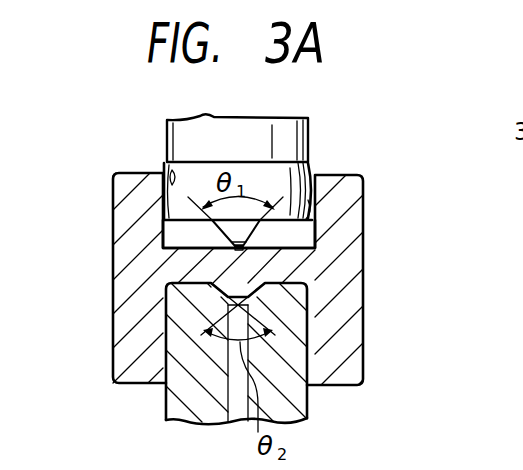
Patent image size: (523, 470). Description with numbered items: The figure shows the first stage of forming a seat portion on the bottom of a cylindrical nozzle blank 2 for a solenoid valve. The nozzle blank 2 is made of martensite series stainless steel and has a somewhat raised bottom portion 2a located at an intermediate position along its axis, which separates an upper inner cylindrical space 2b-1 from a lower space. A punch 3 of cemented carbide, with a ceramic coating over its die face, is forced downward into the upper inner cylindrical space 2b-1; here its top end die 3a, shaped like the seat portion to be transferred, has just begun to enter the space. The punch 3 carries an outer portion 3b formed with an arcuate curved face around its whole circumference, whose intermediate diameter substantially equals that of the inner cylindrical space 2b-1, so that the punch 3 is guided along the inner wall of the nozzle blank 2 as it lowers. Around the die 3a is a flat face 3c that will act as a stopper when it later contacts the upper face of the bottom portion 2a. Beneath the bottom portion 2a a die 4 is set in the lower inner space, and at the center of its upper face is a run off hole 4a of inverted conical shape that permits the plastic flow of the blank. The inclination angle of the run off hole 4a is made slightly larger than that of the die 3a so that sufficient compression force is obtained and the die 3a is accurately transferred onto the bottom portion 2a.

The nozzle blank 2 is at (350, 294).
The bottom portion 2a is at (300, 271).
The upper inner cylindrical space 2b-1 is at (163, 248).
The punch 3 is at (298, 134).
The die 3a is at (257, 225).
The outer portion 3b is at (169, 185).
The flat face 3c is at (316, 247).
The die 4 is at (300, 398).
The run off hole 4a is at (245, 290).